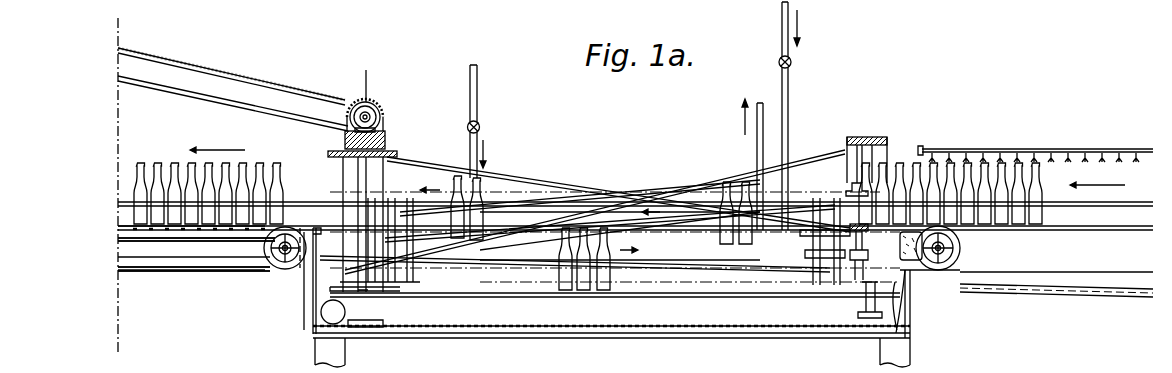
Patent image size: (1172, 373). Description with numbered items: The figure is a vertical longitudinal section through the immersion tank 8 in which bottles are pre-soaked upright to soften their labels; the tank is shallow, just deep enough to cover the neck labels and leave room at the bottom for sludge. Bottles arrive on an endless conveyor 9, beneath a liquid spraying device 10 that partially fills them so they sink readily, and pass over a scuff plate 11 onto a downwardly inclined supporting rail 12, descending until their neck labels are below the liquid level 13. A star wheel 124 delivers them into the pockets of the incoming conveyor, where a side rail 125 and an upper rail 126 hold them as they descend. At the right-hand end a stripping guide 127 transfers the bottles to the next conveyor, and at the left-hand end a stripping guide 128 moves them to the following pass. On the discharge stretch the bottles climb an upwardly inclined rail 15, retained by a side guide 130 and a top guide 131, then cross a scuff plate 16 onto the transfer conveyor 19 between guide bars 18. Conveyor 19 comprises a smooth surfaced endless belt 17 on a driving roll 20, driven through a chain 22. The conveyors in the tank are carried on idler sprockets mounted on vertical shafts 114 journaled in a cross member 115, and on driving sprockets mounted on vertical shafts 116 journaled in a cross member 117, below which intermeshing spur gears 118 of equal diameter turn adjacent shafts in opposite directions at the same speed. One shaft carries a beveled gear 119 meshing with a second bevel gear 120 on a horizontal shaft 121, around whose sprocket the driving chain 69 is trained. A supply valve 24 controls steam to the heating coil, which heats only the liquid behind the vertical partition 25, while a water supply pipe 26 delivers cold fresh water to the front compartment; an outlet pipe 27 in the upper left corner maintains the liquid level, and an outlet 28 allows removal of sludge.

The immersion tank 8 is at (756, 333).
The endless conveyor 9 is at (1103, 230).
The liquid spraying device 10 is at (1091, 148).
The scuff plate 11 is at (916, 286).
The downwardly inclined supporting rail 12 is at (800, 238).
The liquid level 13 is at (624, 230).
The upwardly inclined rail 15 is at (492, 238).
The scuff plate 16 is at (314, 228).
The smooth surfaced endless belt 17 is at (155, 273).
The guide bars 18 is at (134, 196).
The transfer conveyor 19 is at (200, 232).
The driving roll 20 is at (275, 266).
The chain 22 is at (296, 272).
The supply valve 24 is at (480, 127).
The vertical partition 25 is at (672, 222).
The water supply pipe 26 is at (789, 114).
The outlet pipe 27 is at (301, 290).
The outlet 28 is at (313, 332).
The chain 69 is at (258, 84).
The vertical shafts 114 is at (866, 298).
The cross member 115 is at (886, 140).
The vertical shafts 116 is at (368, 182).
The cross member 117 is at (386, 146).
The intermeshing spur gears 118 is at (398, 155).
The beveled gear 119 is at (386, 135).
The second bevel gear 120 is at (372, 75).
The horizontal shaft 121 is at (380, 108).
The star wheel 124 is at (845, 197).
The side rail 125 is at (495, 272).
The upper rail 126 is at (698, 181).
The stripping guide 127 is at (915, 316).
The stripping guide 128 is at (370, 288).
The side guide 130 is at (580, 200).
The top guide 131 is at (556, 186).